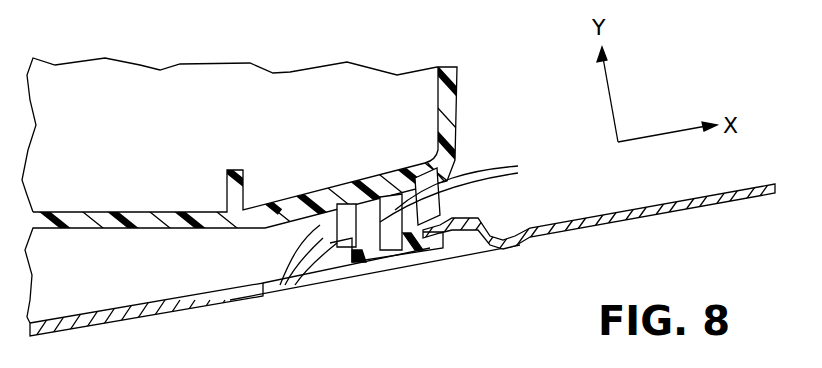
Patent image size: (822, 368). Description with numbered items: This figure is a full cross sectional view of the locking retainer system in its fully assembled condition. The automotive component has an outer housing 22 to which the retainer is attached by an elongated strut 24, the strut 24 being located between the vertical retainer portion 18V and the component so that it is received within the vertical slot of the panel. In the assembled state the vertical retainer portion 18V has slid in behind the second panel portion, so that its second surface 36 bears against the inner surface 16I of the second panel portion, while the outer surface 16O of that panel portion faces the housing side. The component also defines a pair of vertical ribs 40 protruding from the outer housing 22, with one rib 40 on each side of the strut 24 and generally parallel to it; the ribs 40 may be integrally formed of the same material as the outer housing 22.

The outer housing 22 is at (177, 224).
The second surface of the vertical retainer portion 36 is at (350, 232).
The vertical ribs 40 is at (325, 230).
The vertical retainer portion 18V is at (400, 250).
The elongated strut 24 is at (465, 192).
The outer surface of the second panel portion 16O is at (490, 215).
The inner surface of the second panel portion 16I is at (428, 250).